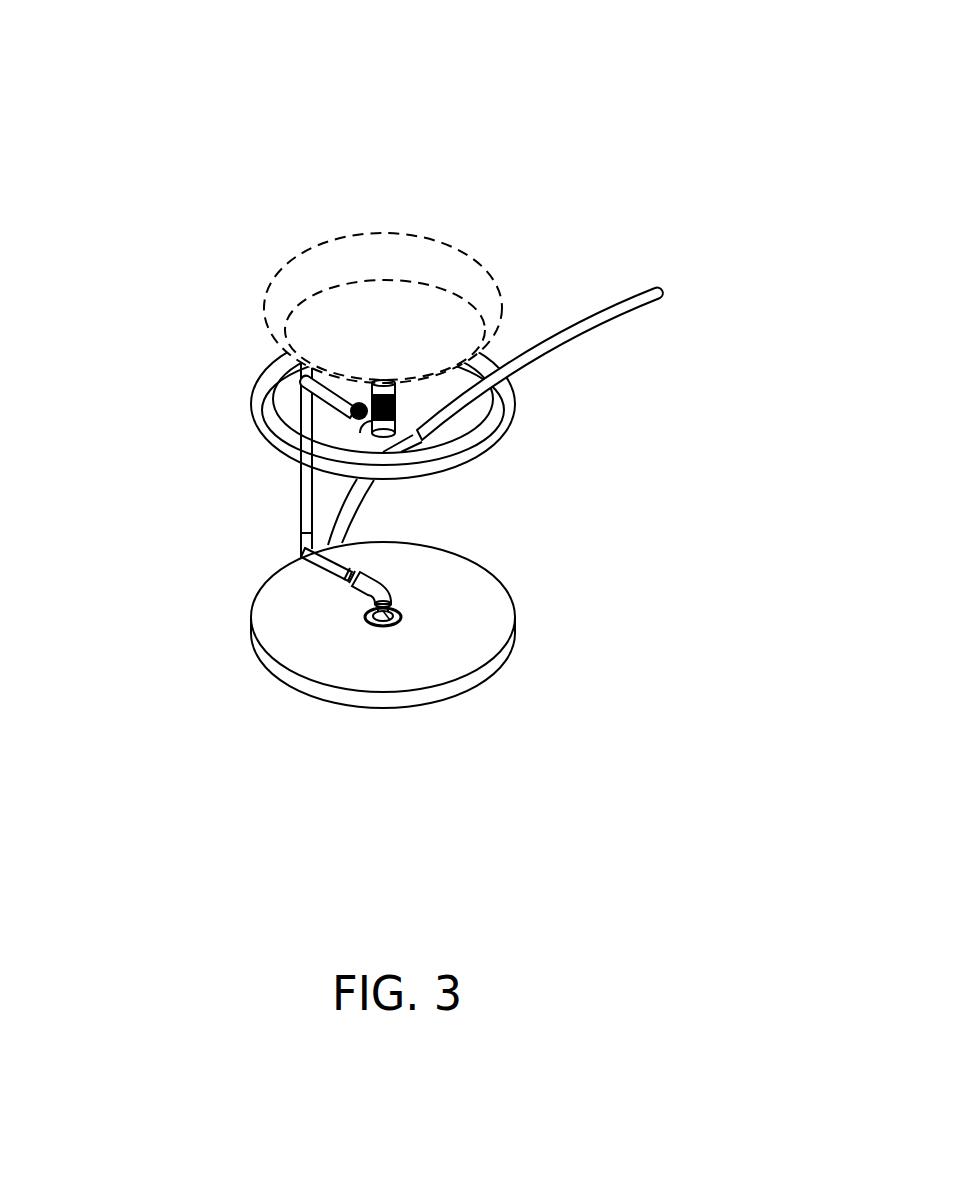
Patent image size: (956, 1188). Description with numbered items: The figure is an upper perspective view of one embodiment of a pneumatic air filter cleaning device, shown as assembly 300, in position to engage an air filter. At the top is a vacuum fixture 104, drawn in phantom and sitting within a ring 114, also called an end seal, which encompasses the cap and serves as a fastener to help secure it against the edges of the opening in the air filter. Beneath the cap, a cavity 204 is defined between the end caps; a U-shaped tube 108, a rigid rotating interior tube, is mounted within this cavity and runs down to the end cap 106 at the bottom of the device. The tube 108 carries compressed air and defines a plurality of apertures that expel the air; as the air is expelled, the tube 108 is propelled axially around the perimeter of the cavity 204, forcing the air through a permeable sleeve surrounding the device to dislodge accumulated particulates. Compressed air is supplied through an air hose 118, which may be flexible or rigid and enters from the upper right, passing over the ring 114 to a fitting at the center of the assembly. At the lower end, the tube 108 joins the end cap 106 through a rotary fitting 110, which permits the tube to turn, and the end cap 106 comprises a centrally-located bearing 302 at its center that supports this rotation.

The vacuum-based measurement assembly 300 is at (90, 85).
The second cap 104 is at (481, 272).
The cavity 204 is at (343, 432).
The rotating interior tube 108 is at (307, 520).
The air hose 118 is at (582, 333).
The ring 114 is at (487, 445).
The end cap 106 is at (510, 628).
The rotary fitting 110 is at (401, 623).
The centrally-located bearing 302 is at (365, 621).